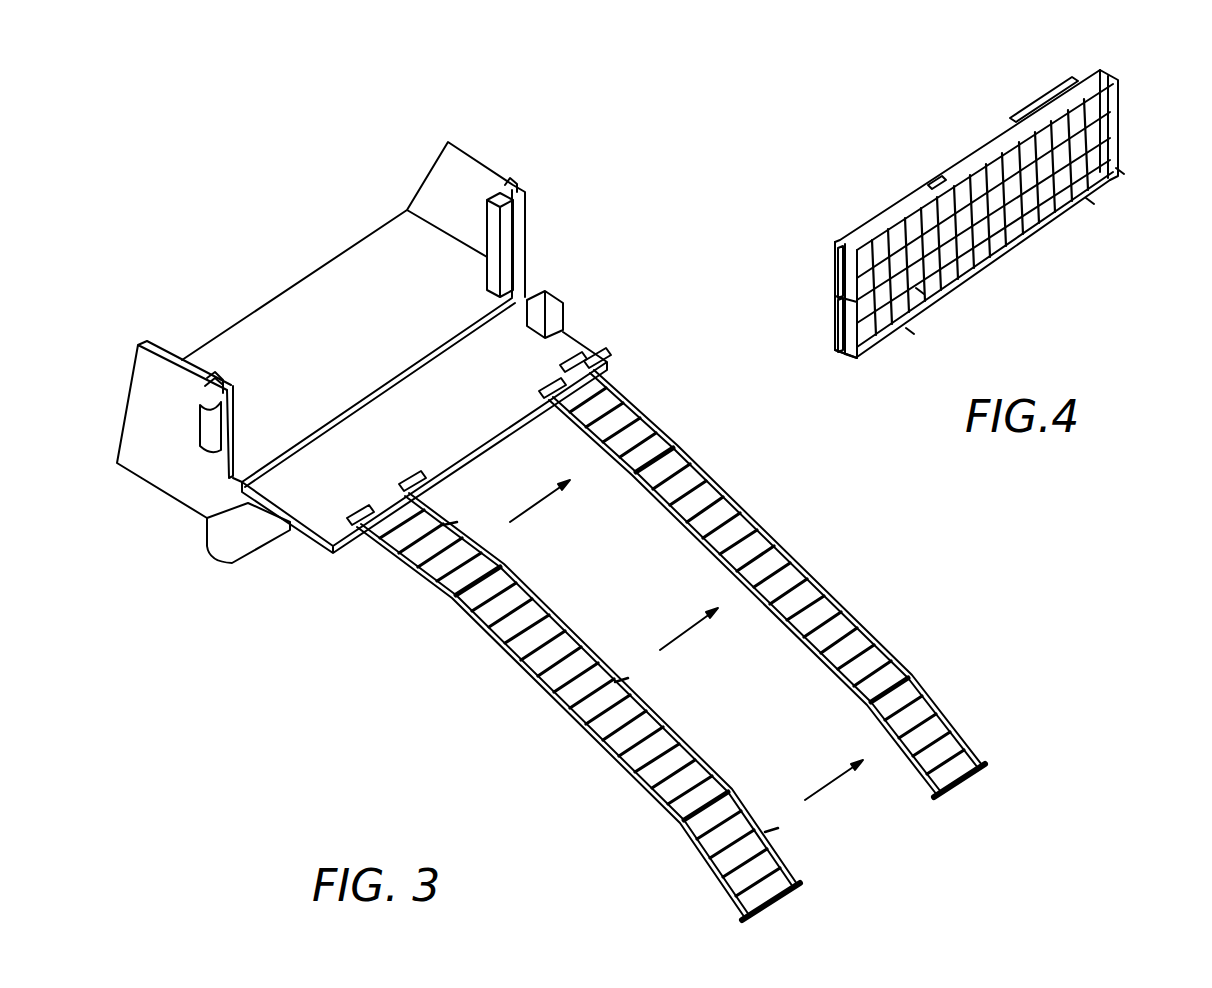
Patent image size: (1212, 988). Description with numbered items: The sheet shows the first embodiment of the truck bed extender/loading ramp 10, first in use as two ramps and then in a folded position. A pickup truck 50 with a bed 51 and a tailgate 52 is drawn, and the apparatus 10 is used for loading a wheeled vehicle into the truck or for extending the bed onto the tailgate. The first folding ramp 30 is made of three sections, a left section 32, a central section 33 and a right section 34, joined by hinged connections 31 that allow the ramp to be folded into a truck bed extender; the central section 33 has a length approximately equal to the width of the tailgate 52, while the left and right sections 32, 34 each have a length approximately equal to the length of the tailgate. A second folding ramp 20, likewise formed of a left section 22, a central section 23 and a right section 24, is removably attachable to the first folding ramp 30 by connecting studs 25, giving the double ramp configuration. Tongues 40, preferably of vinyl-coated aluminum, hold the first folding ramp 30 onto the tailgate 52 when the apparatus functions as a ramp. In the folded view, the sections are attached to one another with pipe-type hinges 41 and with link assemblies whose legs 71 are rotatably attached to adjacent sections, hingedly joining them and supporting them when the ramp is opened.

In FIG. 4, the truck bed extender/loading ramp 10 is at (989, 223).
In FIG. 3, the second folding ramp 20 is at (780, 580).
In FIG. 4, the second folding ramp 20 is at (1125, 108).
In FIG. 3, the left section of second folding ramp 22 is at (640, 407).
In FIG. 4, the left section of second folding ramp 22 is at (838, 243).
In FIG. 3, the central section of second folding ramp 23 is at (755, 520).
In FIG. 4, the central section of second folding ramp 23 is at (982, 160).
In FIG. 3, the right section of second folding ramp 24 is at (946, 718).
In FIG. 4, the right section of second folding ramp 24 is at (1068, 88).
In FIG. 3, the connecting studs 25 is at (452, 522).
In FIG. 3, the first folding ramp 30 is at (578, 706).
In FIG. 4, the first folding ramp 30 is at (1125, 158).
In FIG. 3, the hinged connection 31 is at (452, 595).
In FIG. 3, the left section of first folding ramp 32 is at (408, 564).
In FIG. 4, the left section of first folding ramp 32 is at (838, 347).
In FIG. 3, the central section of first folding ramp 33 is at (536, 684).
In FIG. 4, the central section of first folding ramp 33 is at (1003, 256).
In FIG. 3, the right section of first folding ramp 34 is at (718, 877).
In FIG. 3, the tongues 40 is at (568, 370).
In FIG. 4, the tongues 40 is at (935, 180).
In FIG. 4, the pipe-type hinges 41 is at (838, 282).
In FIG. 3, the pickup truck 50 is at (160, 493).
In FIG. 3, the bed 51 is at (322, 296).
In FIG. 3, the tailgate 52 is at (592, 352).
In FIG. 4, the legs 71 is at (1120, 172).